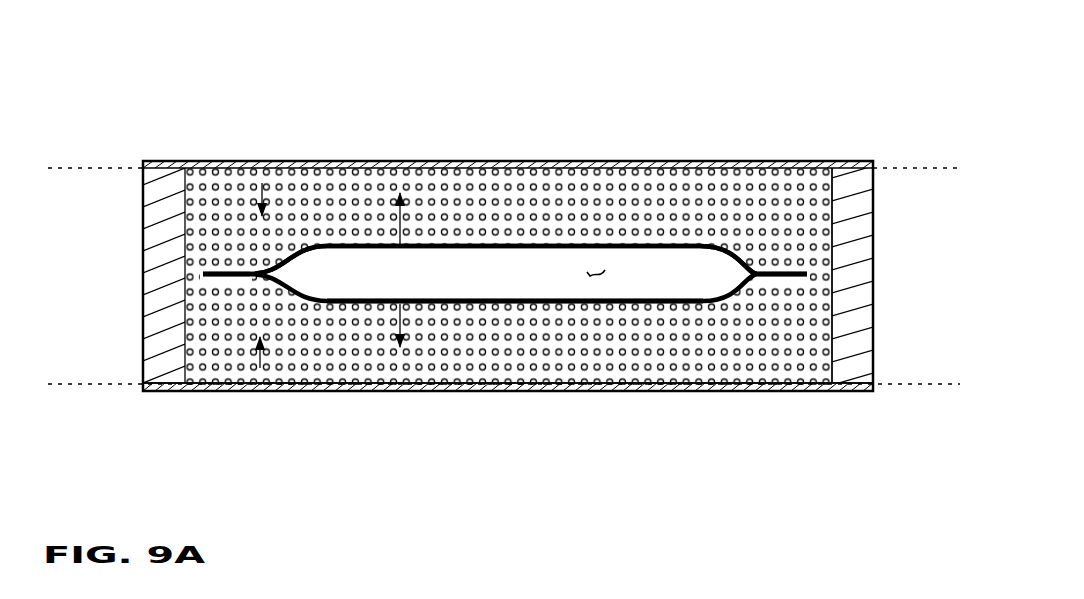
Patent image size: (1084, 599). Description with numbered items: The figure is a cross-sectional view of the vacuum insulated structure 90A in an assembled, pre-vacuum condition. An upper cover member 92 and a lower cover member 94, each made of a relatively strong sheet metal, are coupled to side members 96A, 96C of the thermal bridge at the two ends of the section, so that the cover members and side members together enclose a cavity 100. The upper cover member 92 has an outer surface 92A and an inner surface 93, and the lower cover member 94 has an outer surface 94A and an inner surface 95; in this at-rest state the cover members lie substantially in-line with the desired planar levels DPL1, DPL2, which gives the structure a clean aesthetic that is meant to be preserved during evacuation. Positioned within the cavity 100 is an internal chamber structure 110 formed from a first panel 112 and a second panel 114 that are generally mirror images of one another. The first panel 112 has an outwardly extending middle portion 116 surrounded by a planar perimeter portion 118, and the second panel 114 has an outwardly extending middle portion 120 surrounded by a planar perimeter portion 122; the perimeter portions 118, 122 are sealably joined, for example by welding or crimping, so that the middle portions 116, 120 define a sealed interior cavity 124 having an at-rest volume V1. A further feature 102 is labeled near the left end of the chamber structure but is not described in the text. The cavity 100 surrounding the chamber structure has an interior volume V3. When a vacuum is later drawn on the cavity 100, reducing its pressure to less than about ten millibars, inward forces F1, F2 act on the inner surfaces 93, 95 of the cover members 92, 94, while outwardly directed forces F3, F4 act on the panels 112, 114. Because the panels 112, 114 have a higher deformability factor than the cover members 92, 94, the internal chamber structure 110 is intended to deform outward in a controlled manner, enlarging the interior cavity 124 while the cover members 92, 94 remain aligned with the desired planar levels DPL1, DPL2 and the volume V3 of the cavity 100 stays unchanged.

The upper cover member 92 is at (567, 118).
The vacuum insulated structure 90A is at (768, 112).
The inner surface of upper cover member 93 is at (480, 173).
The outer surface of upper cover member 92A is at (521, 162).
The cavity 100 is at (613, 212).
The lower cover member 94 is at (704, 400).
The outer surface of lower cover member 94A is at (498, 388).
The inner surface of lower cover member 95 is at (305, 386).
The side member 96A is at (142, 232).
The side member 96C is at (873, 268).
The inlet tube section 102 is at (293, 187).
The internal chamber structure 110 is at (362, 220).
The first panel 112 is at (750, 250).
The second panel 114 is at (355, 309).
The outwardly extending middle portion of first panel 116 is at (723, 246).
The perimeter portion of first panel 118 is at (788, 270).
The outwardly extending middle portion of second panel 120 is at (552, 307).
The perimeter portion of second panel 122 is at (788, 279).
The interior cavity 124 is at (600, 302).
The force on upper cover member F1 is at (262, 183).
The force on lower cover member F2 is at (260, 368).
The outwardly directed force on first panel F3 is at (400, 222).
The outwardly directed force on second panel F4 is at (400, 312).
The at-rest volume V1 is at (708, 275).
The interior volume of cavity V3 is at (797, 342).
The desired planar level DPL1 is at (88, 167).
The desired planar level DPL2 is at (98, 386).